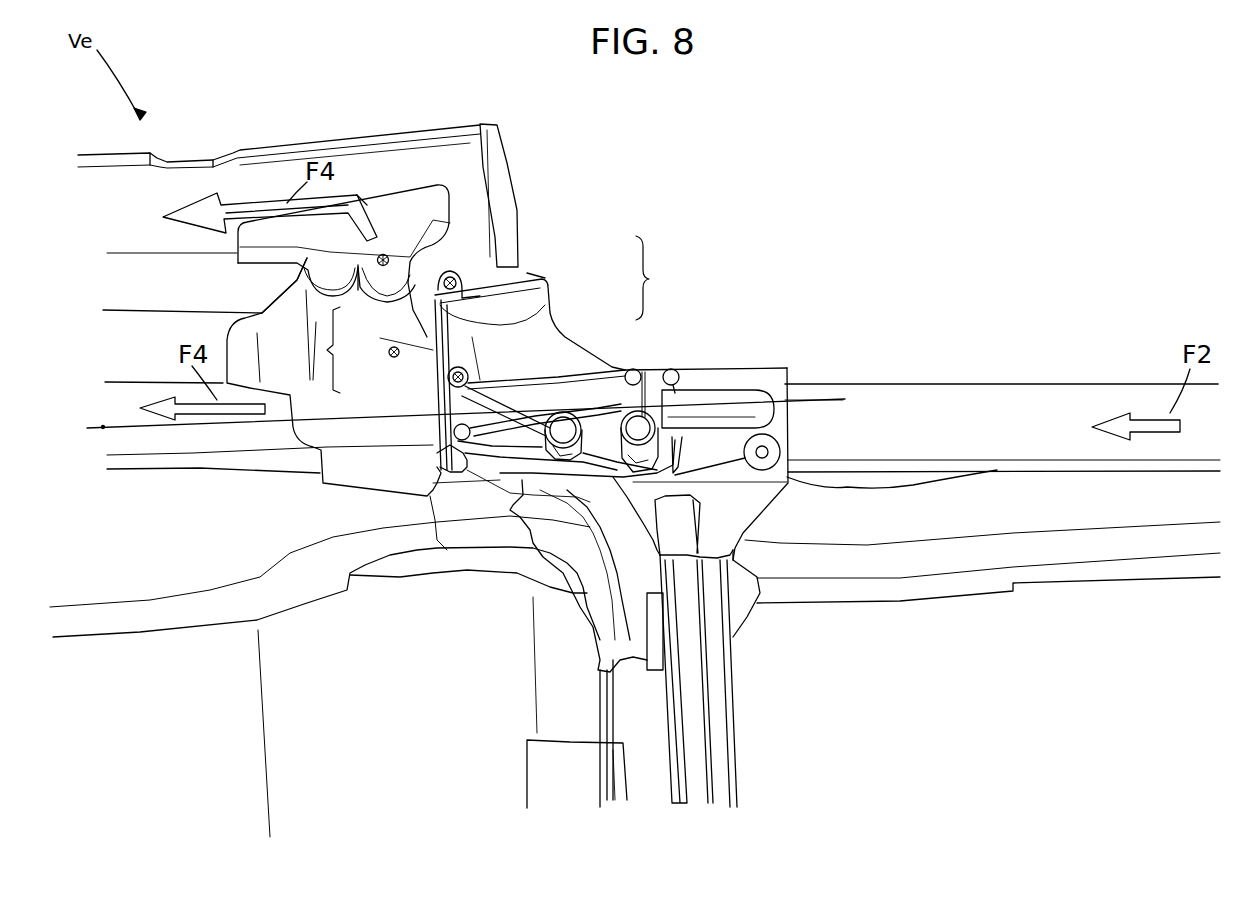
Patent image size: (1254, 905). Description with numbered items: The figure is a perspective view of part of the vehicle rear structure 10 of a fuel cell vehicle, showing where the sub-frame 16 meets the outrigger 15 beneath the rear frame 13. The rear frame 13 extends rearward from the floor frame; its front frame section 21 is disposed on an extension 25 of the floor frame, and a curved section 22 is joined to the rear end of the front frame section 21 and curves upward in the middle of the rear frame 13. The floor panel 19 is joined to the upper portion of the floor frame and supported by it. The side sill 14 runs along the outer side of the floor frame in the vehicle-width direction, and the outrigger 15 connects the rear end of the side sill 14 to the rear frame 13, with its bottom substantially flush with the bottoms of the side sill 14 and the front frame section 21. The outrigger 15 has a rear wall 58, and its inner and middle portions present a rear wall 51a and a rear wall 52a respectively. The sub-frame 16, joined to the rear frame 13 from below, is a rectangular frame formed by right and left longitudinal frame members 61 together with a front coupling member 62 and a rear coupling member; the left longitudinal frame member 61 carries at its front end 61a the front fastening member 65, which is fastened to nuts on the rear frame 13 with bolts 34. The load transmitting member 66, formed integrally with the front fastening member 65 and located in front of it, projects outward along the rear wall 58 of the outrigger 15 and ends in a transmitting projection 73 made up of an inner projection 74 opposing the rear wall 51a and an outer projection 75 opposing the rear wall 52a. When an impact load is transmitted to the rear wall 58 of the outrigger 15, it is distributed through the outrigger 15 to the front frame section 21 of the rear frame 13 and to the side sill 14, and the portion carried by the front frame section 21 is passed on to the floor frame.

The vehicle rear structure 10 is at (215, 130).
The rear frame 13 is at (1013, 592).
The side sill 14 is at (248, 173).
The outrigger 15 is at (387, 188).
The sub-frame 16 is at (1113, 381).
The floor panel 19 is at (170, 673).
The front frame section 21 is at (138, 390).
The curved section 22 is at (1110, 548).
The extension 25 is at (100, 430).
The bolts 34 is at (633, 370).
The rear wall 51a is at (437, 432).
The rear wall 52a is at (430, 315).
The rear wall 58 is at (331, 352).
The longitudinal frame member 61 is at (1000, 400).
The front end 61a is at (720, 470).
The front coupling member 62 is at (693, 742).
The front fastening member 65 is at (633, 453).
The load transmitting member 66 is at (527, 273).
The transmitting projection 73 is at (661, 278).
The inner projection 74 is at (485, 393).
The outer projection 75 is at (468, 350).